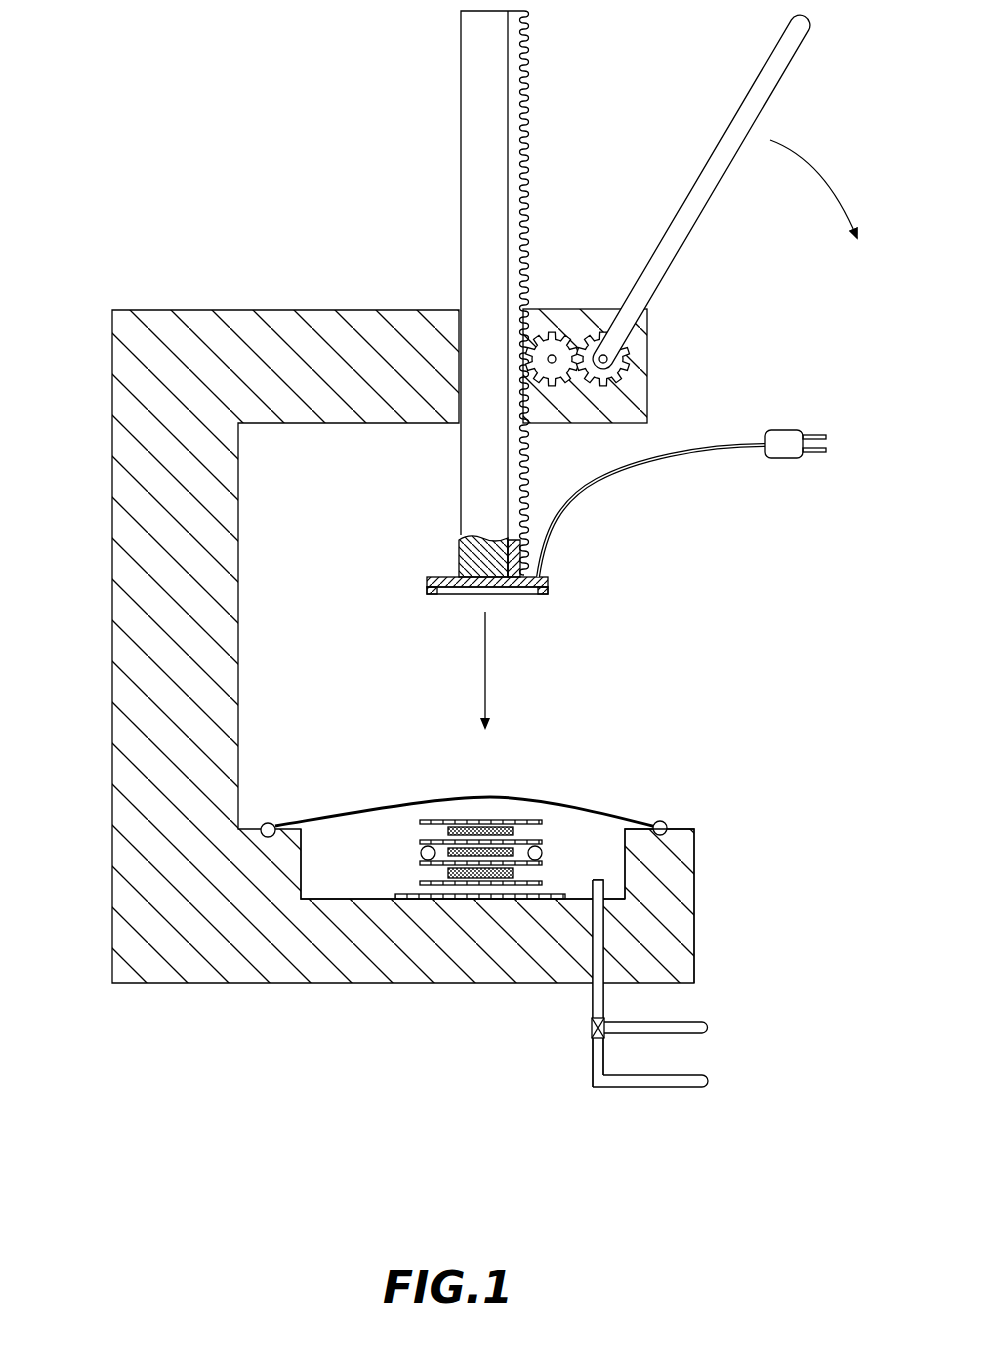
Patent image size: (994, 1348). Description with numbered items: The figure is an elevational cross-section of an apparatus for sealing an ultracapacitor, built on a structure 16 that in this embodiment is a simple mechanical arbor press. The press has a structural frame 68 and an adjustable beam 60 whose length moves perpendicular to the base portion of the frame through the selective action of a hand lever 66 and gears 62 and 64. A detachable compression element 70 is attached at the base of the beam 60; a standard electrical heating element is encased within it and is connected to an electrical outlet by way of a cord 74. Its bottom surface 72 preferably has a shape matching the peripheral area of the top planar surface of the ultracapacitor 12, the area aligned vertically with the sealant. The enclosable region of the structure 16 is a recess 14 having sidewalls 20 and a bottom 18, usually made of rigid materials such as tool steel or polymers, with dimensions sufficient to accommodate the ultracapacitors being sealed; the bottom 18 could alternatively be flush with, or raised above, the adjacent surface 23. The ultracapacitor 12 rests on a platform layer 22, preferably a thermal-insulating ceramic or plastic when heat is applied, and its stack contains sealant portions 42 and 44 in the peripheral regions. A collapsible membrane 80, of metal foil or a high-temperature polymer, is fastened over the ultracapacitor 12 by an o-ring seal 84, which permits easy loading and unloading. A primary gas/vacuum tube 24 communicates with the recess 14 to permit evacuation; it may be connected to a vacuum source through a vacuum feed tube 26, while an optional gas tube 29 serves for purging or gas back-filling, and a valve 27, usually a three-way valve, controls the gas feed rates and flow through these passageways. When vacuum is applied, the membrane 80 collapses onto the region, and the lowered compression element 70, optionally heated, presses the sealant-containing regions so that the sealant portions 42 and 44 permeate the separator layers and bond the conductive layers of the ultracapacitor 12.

The structure 16 is at (273, 267).
The adjustable beam 60 is at (493, 128).
The gear 62 is at (549, 343).
The gear 64 is at (624, 366).
The hand lever 66 is at (760, 95).
The structural frame 68 is at (143, 627).
The detachable compression element 70 is at (548, 582).
The bottom surface 72 is at (540, 594).
The cord 74 is at (737, 443).
The collapsible membrane 80 is at (377, 810).
The ultracapacitor 12 is at (552, 830).
The recess 14 is at (517, 827).
The o-ring seal 84 is at (667, 822).
The surface 23 is at (680, 827).
The sidewalls 20 is at (302, 838).
The sealant portion 44 is at (422, 856).
The sealant portion 42 is at (543, 853).
The bottom 18 is at (313, 898).
The platform layer 22 is at (547, 895).
The primary gas/vacuum tube 24 is at (598, 968).
The valve 27 is at (590, 1030).
The vacuum feed tube 26 is at (682, 1028).
The gas tube 29 is at (685, 1080).